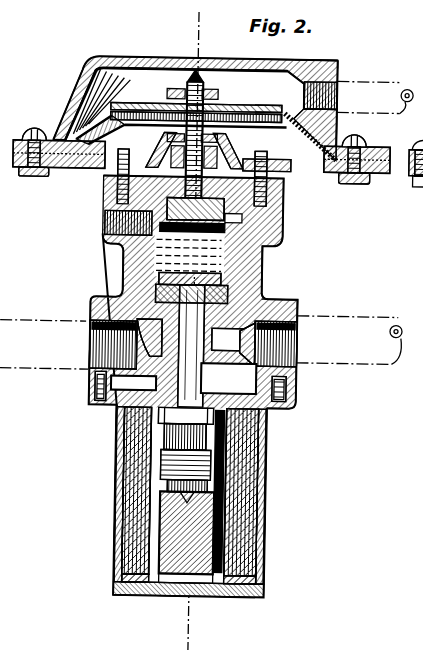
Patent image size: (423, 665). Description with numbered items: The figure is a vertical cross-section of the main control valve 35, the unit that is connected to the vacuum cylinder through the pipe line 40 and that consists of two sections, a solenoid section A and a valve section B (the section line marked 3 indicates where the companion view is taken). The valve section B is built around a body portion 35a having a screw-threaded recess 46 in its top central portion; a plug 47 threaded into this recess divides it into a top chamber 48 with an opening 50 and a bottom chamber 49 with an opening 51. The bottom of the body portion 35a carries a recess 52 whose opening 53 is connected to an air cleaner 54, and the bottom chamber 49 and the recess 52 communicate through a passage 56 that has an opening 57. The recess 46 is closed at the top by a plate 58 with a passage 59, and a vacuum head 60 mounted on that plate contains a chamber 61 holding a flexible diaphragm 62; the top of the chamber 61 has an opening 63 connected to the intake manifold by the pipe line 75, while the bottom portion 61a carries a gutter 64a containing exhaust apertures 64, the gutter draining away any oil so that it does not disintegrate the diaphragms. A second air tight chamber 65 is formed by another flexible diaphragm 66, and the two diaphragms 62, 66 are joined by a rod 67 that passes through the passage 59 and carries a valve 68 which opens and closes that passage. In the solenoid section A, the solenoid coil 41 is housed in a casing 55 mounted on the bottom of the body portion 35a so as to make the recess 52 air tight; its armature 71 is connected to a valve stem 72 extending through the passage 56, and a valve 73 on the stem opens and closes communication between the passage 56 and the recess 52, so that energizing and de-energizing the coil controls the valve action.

The main control valve 35 is at (92, 57).
The body portion 35a is at (260, 262).
The section line 3- 3 is at (201, 24).
The pipe line 40 is at (358, 366).
The solenoid coil 41 is at (247, 553).
The recess 46 is at (262, 248).
The plug 47 is at (125, 262).
The top chamber 48 is at (260, 233).
The bottom chamber 49 is at (258, 297).
The opening 50 is at (105, 233).
The opening 51 is at (121, 293).
The recess 52 is at (133, 380).
The opening 53 is at (100, 354).
The air cleaner 54 is at (3, 373).
The casing 55 is at (119, 548).
The passage 56 is at (178, 313).
The opening 57 is at (290, 347).
The plate 58 is at (279, 192).
The passage 59 is at (102, 192).
The vacuum head 60 is at (331, 60).
The chamber 61 is at (158, 80).
The bottom portion 61a is at (58, 114).
The flexible diaphragm 62 is at (290, 137).
The opening 63 is at (331, 98).
The exhaust apertures 64 is at (80, 175).
The gutter 64a is at (335, 152).
The second air tight chamber 65 is at (222, 165).
The flexible diaphragm 66 is at (247, 162).
The rod 67 is at (202, 66).
The valve 68 is at (280, 212).
The armature 71 is at (208, 525).
The valve stem 72 is at (271, 439).
The valve 73 is at (301, 373).
The pipe line 75 is at (376, 77).
The solenoid section A is at (117, 514).
The valve section B is at (99, 245).